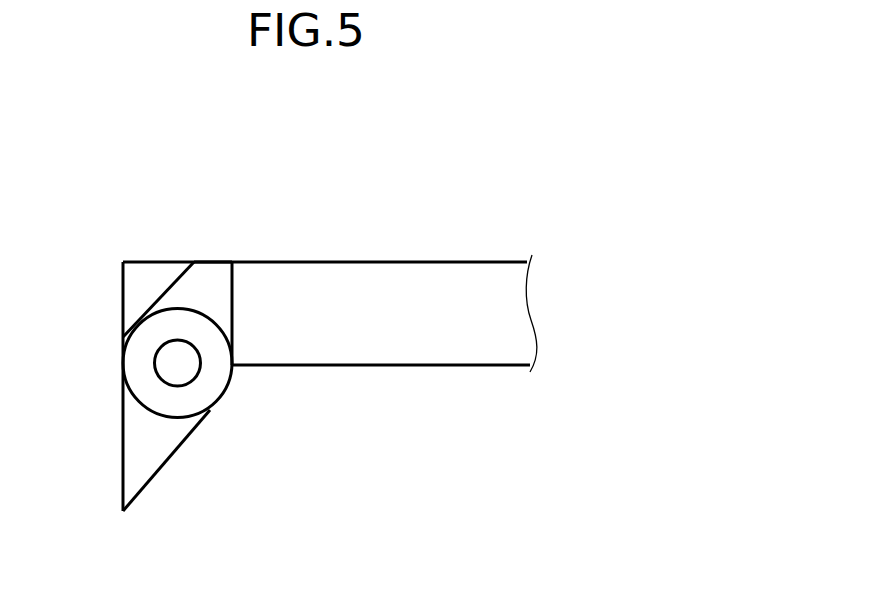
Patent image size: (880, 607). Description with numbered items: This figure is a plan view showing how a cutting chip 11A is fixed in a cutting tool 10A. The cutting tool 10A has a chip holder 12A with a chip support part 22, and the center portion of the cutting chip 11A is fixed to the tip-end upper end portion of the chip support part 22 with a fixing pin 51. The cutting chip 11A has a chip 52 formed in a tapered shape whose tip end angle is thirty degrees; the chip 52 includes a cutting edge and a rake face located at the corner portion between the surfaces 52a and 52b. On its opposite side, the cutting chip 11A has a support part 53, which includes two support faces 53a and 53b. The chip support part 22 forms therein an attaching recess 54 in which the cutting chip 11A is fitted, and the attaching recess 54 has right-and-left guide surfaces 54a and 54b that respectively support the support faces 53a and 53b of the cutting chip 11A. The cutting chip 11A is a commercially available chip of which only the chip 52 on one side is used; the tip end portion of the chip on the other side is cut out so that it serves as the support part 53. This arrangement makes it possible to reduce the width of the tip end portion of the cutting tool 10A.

The cutting tool 10A is at (412, 150).
The cutting chip 11A is at (221, 435).
The chip holder 12A is at (487, 243).
The chip support part 22 is at (328, 282).
The fixing pin 51 is at (178, 363).
The chip 52 is at (142, 467).
The surface of chip 52a is at (122, 470).
The surface of chip 52b is at (162, 465).
The support part 53 is at (210, 268).
The support face 53a is at (172, 283).
The support face 53b is at (233, 285).
The attaching recess 54 is at (280, 158).
The guide surface 54a is at (198, 262).
The guide surface 54b is at (220, 264).